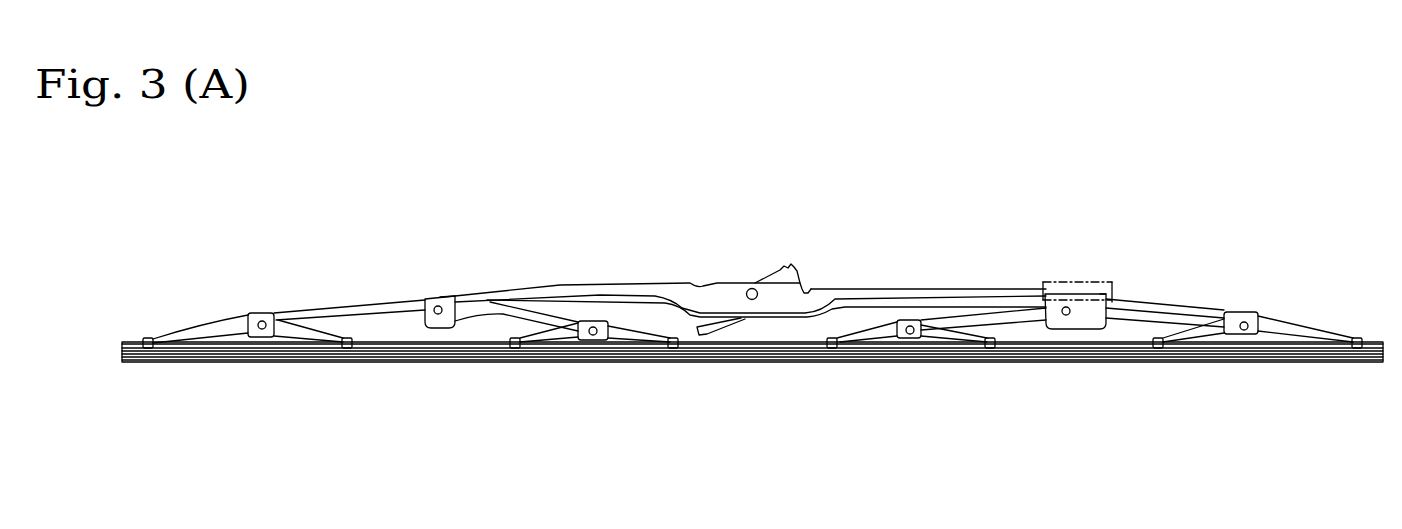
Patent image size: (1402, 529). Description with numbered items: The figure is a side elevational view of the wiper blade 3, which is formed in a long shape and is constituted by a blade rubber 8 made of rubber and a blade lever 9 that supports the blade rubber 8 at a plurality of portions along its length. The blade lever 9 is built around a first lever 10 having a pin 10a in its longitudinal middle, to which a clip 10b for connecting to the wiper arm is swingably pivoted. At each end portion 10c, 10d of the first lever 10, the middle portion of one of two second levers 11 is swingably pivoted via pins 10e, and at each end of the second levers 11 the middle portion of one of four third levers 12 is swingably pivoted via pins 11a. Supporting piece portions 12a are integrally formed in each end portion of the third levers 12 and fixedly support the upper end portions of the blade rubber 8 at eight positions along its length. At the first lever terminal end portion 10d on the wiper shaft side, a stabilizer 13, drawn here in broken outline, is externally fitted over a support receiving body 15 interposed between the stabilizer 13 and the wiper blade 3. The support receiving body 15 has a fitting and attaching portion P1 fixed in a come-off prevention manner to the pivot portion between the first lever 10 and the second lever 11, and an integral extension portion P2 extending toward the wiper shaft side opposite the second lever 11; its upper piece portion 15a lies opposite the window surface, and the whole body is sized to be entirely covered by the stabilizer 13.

The wiper blade 3 is at (1235, 183).
The blade rubber 8 is at (750, 364).
The blade lever 9 is at (858, 268).
The first lever 10 is at (603, 282).
The pin 10a is at (746, 290).
The clip 10b is at (774, 264).
The end portion of the first lever 10c is at (437, 285).
The first lever terminal end portion 10d is at (1103, 291).
The pin 10e is at (443, 306).
The second lever 11 is at (316, 282).
The pin 11a is at (261, 321).
The third lever 12 is at (341, 336).
The supporting piece portion 12a is at (150, 348).
The stabilizer 13 is at (1091, 276).
The support receiving body 15 is at (1080, 313).
The upper piece portion 15a is at (676, 528).
The fitting and attaching portion P1 is at (1067, 322).
The extension portion P2 is at (1098, 313).